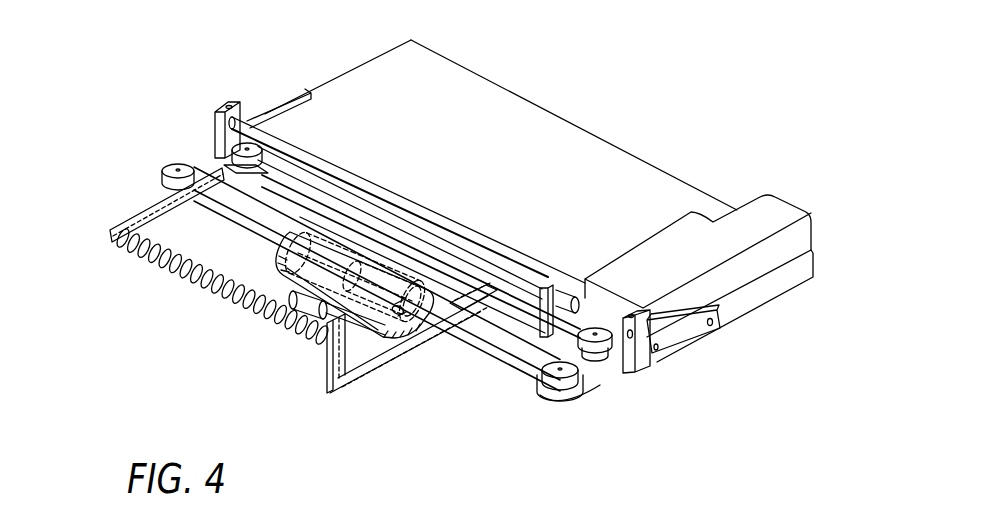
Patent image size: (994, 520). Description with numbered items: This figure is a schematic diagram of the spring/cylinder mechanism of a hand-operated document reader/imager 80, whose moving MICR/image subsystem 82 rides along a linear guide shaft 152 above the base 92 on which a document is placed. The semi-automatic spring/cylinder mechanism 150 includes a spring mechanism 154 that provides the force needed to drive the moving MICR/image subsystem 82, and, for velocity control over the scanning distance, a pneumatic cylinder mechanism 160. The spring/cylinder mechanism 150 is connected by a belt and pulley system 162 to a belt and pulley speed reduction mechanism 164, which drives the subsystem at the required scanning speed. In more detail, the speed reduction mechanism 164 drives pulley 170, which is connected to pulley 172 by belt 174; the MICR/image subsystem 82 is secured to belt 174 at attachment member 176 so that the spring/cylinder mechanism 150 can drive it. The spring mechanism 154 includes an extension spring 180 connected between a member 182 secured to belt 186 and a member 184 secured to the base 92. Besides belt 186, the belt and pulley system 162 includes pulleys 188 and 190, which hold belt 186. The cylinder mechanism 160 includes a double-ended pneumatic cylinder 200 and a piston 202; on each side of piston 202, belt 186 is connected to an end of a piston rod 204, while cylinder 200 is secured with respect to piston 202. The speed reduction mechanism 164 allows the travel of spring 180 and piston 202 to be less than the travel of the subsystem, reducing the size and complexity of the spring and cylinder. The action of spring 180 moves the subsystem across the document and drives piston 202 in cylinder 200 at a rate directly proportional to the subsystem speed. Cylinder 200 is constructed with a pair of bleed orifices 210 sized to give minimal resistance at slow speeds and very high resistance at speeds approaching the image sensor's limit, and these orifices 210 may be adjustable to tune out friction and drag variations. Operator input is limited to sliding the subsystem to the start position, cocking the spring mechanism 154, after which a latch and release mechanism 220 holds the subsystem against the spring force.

The hand-operated document reader/imager 80 is at (618, 77).
The moving MICR/image subsystem 82 is at (768, 196).
The base 92 is at (467, 63).
The spring/cylinder mechanism 150 is at (358, 388).
The linear guide shaft 152 is at (265, 112).
The spring mechanism 154 is at (163, 281).
The pneumatic cylinder mechanism 160 is at (252, 252).
The belt and pulley system 162 is at (464, 364).
The belt and pulley speed reduction mechanism 164 is at (595, 402).
The pulley 170 is at (601, 348).
The pulley 172 is at (228, 120).
The belt 174 is at (236, 147).
The attachment member 176 is at (572, 297).
The extension spring 180 is at (307, 337).
The member 182 is at (140, 215).
The member 184 is at (340, 393).
The belt 186 is at (160, 256).
The pulley 188 is at (560, 386).
The pulley 190 is at (163, 170).
The double-ended pneumatic cylinder 200 is at (263, 188).
The piston 202 is at (376, 315).
The piston rod 204 is at (260, 317).
The bleed orifices 210 is at (341, 228).
The latch and release mechanism 220 is at (651, 320).